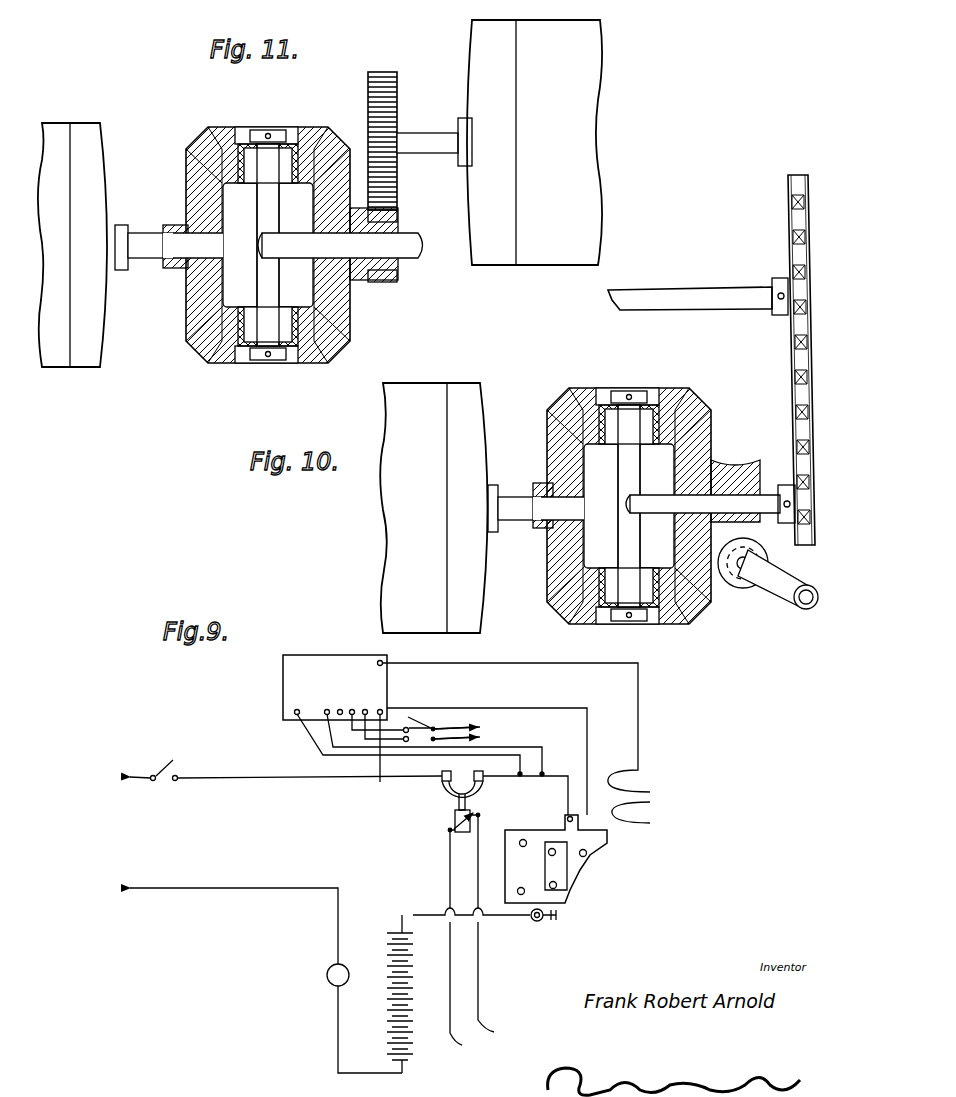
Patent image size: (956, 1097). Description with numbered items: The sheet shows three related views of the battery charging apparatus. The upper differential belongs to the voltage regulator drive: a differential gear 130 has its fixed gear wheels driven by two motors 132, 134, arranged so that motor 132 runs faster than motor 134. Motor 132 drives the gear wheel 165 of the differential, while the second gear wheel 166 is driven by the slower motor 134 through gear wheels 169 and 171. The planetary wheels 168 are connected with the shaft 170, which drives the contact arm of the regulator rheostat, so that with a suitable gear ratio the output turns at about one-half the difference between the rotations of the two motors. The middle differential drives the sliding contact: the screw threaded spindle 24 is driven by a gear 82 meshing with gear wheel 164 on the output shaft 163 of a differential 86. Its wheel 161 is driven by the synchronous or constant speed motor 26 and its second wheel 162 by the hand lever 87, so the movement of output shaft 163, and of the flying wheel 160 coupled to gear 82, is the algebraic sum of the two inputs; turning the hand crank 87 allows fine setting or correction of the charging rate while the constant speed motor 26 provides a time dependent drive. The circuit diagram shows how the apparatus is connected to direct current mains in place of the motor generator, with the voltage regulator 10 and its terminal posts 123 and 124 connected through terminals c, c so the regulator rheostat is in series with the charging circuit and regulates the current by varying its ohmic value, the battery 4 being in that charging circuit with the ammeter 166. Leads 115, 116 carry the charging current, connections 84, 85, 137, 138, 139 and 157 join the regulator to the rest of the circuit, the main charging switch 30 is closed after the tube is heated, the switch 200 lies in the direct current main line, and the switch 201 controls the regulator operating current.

In FIG. 9, the battery 4 is at (414, 985).
In FIG. 9, the voltage regulator 10 is at (312, 655).
In FIG. 11, the screw threaded spindle 24 is at (678, 288).
In FIG. 10, the synchronous or constant speed motor 26 is at (402, 537).
In FIG. 9, the main charging switch 30 is at (472, 815).
In FIG. 11, the gear 82 is at (792, 348).
In FIG. 9, the field coil 84 is at (641, 712).
In FIG. 9, the lead 85 is at (490, 707).
In FIG. 10, the differential 86 is at (686, 628).
In FIG. 10, the hand lever 87 is at (781, 606).
In FIG. 9, the lead 115 is at (465, 950).
In FIG. 9, the lead 116 is at (501, 933).
In FIG. 9, the terminal post 123 is at (324, 714).
In FIG. 9, the terminal post 124 is at (294, 711).
In FIG. 11, the differential gear 130 is at (269, 238).
In FIG. 11, the motor 132 is at (100, 366).
In FIG. 11, the motor 134 is at (583, 172).
In FIG. 9, the terminal 137 is at (338, 714).
In FIG. 9, the terminal 138 is at (355, 710).
In FIG. 9, the terminal 139 is at (384, 710).
In FIG. 9, the lead 157 is at (380, 782).
In FIG. 10, the flying wheel 160 is at (626, 503).
In FIG. 10, the wheel 161 is at (552, 580).
In FIG. 10, the second wheel 162 is at (707, 585).
In FIG. 10, the output shaft 163 is at (726, 500).
In FIG. 10, the gear wheel 164 is at (800, 540).
In FIG. 11, the gear wheel 165 is at (192, 186).
In FIG. 11, the second gear wheel 166 is at (348, 322).
In FIG. 9, the second gear wheel 166 is at (327, 975).
In FIG. 11, the planetary wheels 168 is at (318, 352).
In FIG. 11, the gear wheel 169 is at (384, 283).
In FIG. 11, the shaft 170 is at (408, 255).
In FIG. 11, the gear wheel 171 is at (383, 104).
In FIG. 9, the switch 200 is at (178, 770).
In FIG. 9, the switch 201 is at (455, 720).